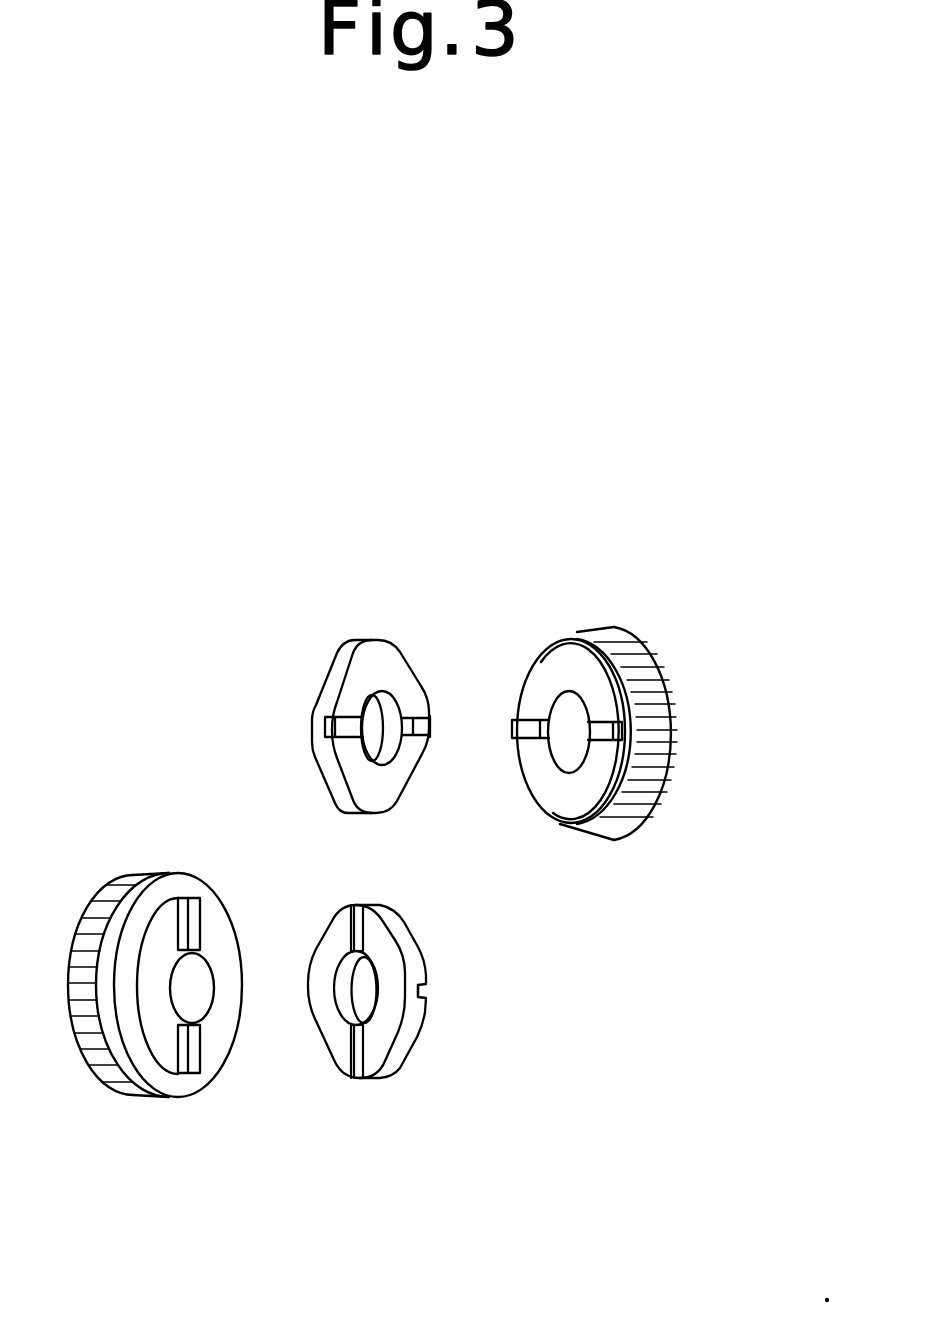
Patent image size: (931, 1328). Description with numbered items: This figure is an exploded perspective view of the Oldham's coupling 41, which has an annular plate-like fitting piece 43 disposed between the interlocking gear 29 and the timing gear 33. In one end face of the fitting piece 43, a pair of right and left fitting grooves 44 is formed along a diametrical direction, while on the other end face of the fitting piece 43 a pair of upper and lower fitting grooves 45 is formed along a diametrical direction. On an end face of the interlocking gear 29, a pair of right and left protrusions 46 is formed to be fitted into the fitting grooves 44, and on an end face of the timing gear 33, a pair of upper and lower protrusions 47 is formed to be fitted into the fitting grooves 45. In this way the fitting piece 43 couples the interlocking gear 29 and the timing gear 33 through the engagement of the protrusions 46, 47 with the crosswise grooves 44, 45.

The interlocking gear 29 is at (680, 703).
The timing gear 33 is at (97, 1070).
The Oldham's coupling 41 is at (337, 532).
The fitting piece 43 is at (383, 660).
The fitting grooves 44 is at (415, 725).
The fitting grooves 45 is at (350, 913).
The protrusions 46 is at (510, 728).
The protrusions 47 is at (193, 925).